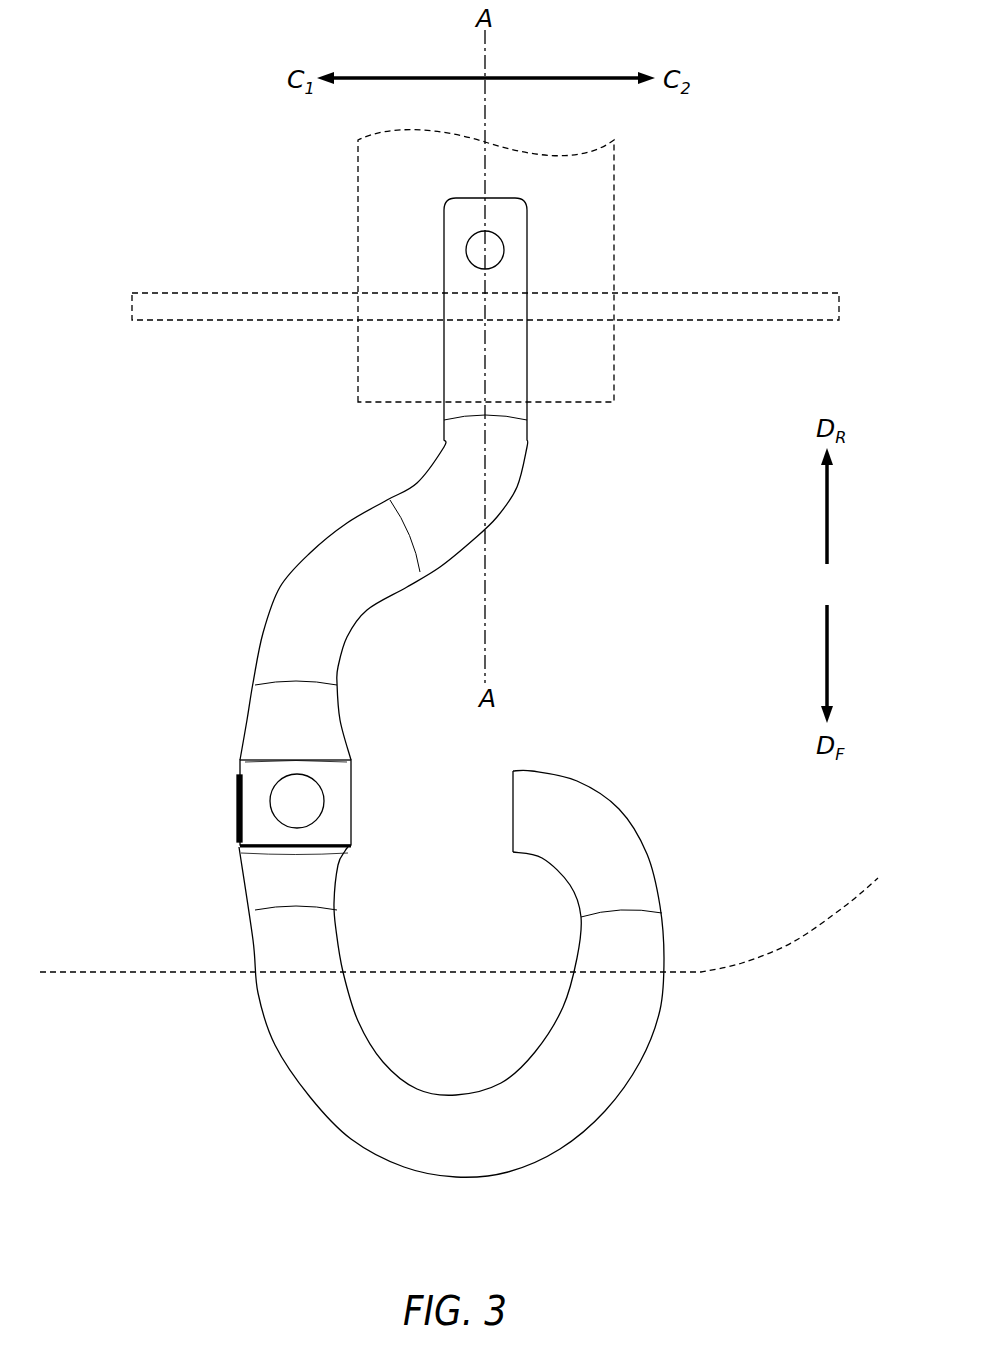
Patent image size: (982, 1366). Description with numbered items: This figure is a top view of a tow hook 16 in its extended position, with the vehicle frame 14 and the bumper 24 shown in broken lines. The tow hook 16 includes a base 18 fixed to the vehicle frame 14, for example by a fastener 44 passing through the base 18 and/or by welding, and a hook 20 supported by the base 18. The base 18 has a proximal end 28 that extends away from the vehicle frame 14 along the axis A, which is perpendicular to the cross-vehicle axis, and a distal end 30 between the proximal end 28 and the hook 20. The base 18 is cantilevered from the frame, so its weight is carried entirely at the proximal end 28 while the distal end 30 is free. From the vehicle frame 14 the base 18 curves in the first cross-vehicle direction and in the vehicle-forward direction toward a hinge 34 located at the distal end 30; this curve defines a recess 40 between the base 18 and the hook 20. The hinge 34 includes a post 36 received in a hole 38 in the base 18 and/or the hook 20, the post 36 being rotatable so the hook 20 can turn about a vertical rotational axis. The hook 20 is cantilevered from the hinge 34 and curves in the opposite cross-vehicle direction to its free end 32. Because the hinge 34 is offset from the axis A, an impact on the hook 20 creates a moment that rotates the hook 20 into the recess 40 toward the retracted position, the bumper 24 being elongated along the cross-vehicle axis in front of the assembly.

The vehicle frame 14 is at (745, 293).
The tow hook 16 is at (183, 469).
The base 18 is at (430, 493).
The hook 20 is at (563, 1116).
The bumper 24 is at (814, 942).
The proximal end 28 is at (529, 354).
The distal end 30 is at (325, 847).
The free end 32 is at (509, 809).
The hinge 34 is at (220, 781).
The post 36 is at (298, 803).
The hole 38 is at (325, 800).
The recess 40 is at (428, 688).
The fastener 44 is at (505, 251).